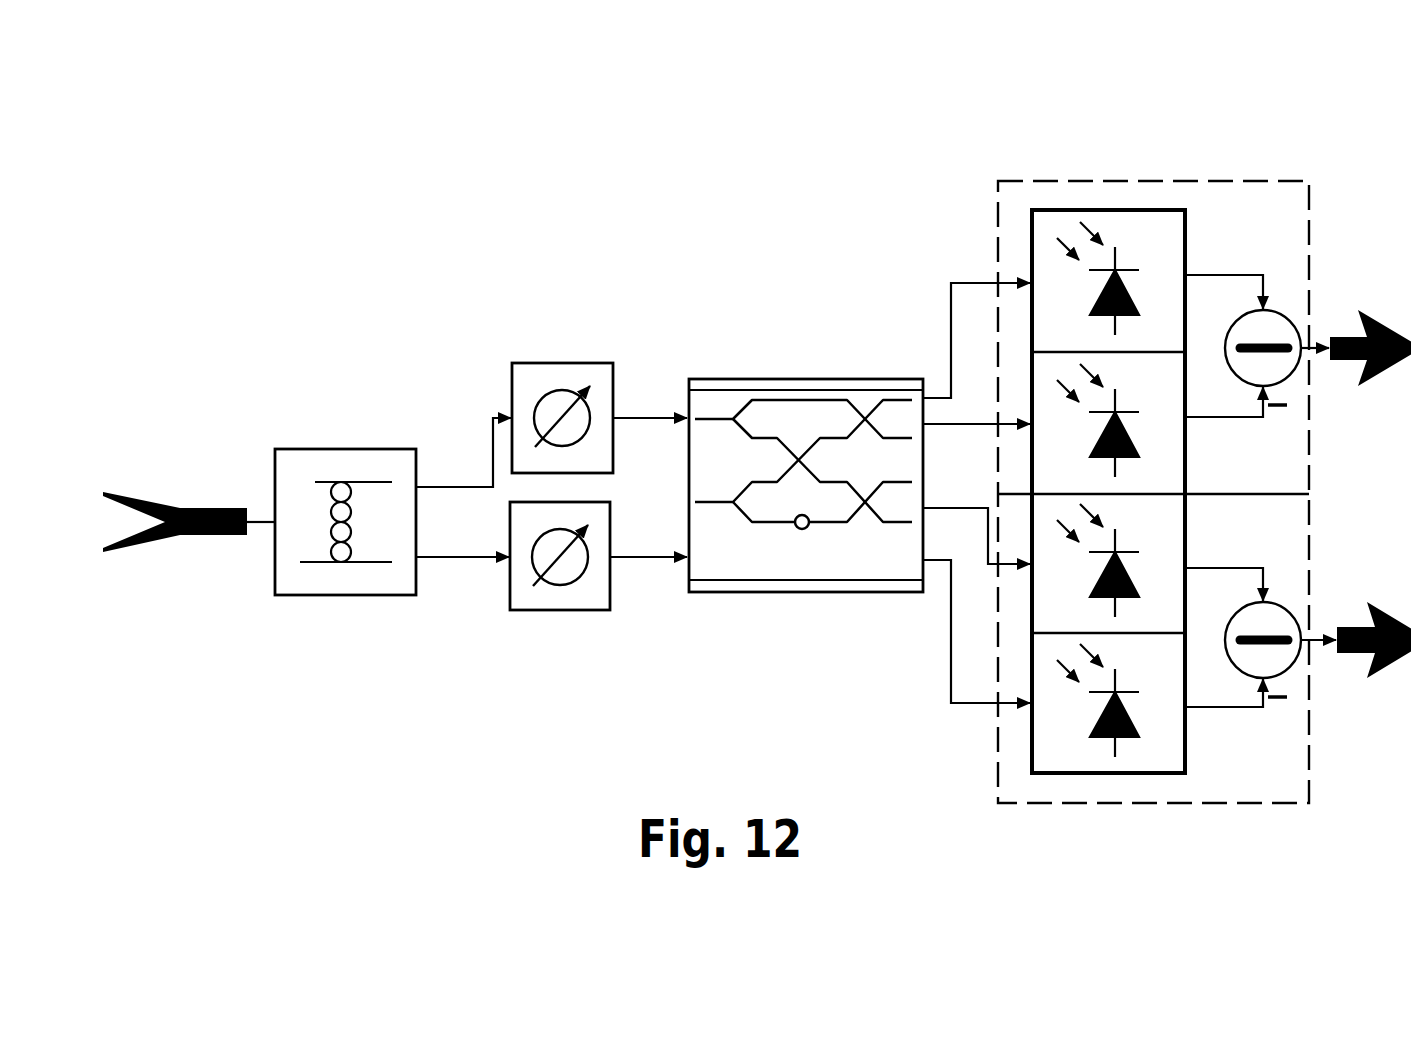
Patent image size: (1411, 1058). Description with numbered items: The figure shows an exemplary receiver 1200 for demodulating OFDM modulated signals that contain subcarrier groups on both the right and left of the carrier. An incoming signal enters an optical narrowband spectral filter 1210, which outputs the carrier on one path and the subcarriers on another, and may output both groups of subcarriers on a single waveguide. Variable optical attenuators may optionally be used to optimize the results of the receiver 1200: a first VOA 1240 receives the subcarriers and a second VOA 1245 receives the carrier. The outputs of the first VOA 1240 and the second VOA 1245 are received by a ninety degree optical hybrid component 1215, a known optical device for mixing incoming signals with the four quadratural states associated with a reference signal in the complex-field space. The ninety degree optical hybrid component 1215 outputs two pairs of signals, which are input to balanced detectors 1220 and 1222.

The receiver 1200 is at (290, 360).
The optical narrowband spectral filter 1210 is at (410, 447).
The 90 degree optical hybrid component 1215 is at (837, 360).
The balanced detector 1220 is at (1303, 179).
The balanced detector 1222 is at (1290, 803).
The first VOA 1240 is at (573, 611).
The second VOA 1245 is at (560, 345).